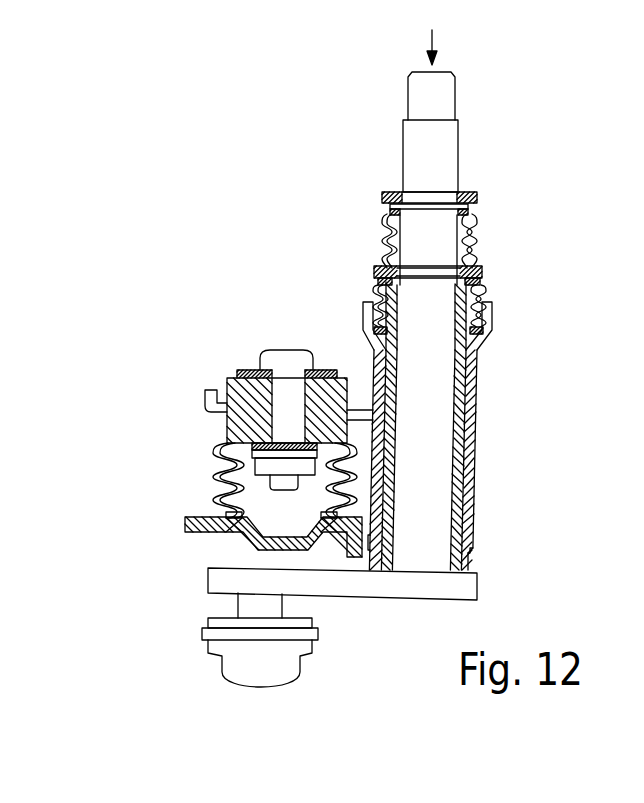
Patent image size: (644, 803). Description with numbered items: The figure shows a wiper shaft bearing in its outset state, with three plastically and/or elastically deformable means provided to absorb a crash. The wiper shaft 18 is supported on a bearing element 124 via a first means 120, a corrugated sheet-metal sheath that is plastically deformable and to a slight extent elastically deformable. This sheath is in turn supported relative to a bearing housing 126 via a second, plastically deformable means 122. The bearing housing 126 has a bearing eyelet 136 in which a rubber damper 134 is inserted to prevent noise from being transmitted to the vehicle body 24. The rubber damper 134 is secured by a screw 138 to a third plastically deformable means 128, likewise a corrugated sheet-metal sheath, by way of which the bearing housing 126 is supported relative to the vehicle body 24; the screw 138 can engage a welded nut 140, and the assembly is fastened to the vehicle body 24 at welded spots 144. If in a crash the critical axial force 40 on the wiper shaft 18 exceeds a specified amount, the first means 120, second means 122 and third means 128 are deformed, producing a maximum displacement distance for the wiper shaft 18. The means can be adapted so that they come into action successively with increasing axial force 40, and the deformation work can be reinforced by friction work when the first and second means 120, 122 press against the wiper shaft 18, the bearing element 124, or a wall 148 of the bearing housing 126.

The axial force 40 is at (432, 43).
The wiper shaft 18 is at (441, 168).
The first means 120 is at (475, 240).
The second means 122 is at (488, 300).
The wall 148 is at (488, 320).
The bearing element 124 is at (456, 465).
The bearing housing 126 is at (467, 545).
The rubber damper 134 is at (233, 403).
The screw 138 is at (277, 357).
The bearing eyelet 136 is at (207, 394).
The third means 128 is at (215, 481).
The welded nut 140 is at (297, 467).
The vehicle body 24 is at (210, 525).
The welded spots 144 is at (232, 518).